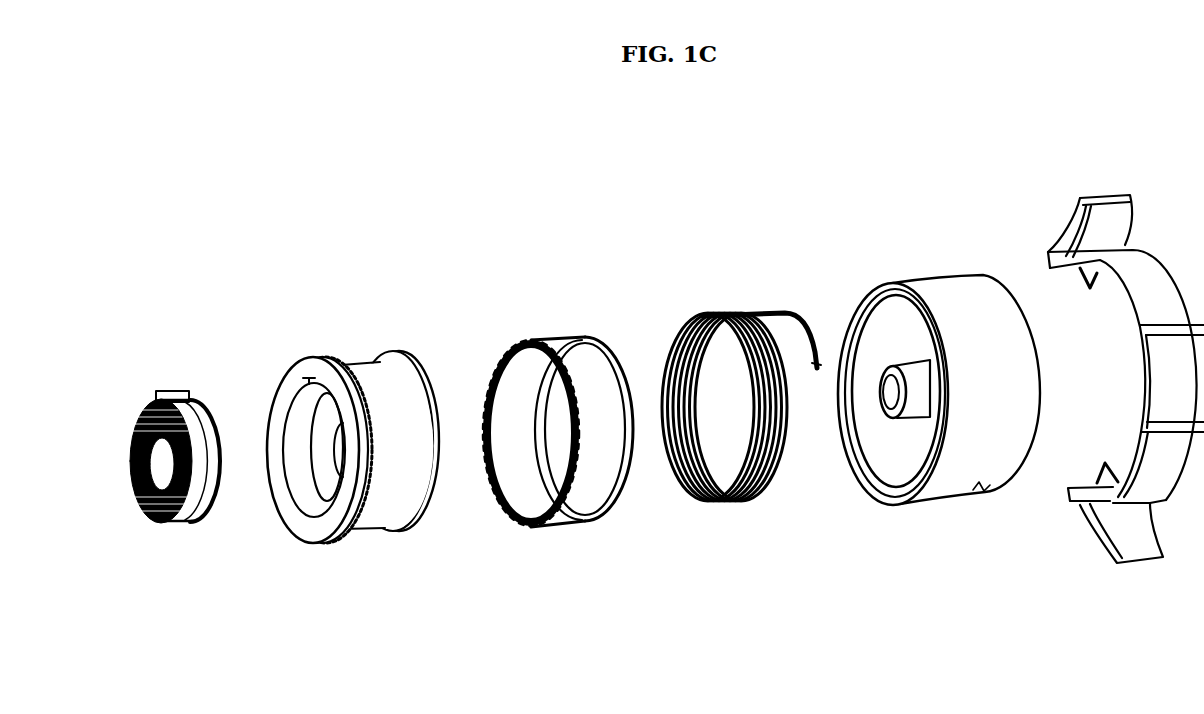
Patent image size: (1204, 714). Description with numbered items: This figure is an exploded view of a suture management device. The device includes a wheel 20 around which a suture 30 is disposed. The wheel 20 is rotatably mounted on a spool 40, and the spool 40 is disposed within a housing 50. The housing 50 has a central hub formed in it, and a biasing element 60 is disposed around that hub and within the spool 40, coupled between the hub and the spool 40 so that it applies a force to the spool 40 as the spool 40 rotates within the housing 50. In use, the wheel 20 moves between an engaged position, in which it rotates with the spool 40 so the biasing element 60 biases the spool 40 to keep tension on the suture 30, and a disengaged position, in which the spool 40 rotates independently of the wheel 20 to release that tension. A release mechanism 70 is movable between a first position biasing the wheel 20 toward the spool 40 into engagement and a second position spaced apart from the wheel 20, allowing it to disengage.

The wheel 20 is at (545, 326).
The suture 30 is at (720, 290).
The spool 40 is at (346, 336).
The housing 50 is at (938, 258).
The biasing element 60 is at (165, 374).
The release mechanism 70 is at (1103, 186).